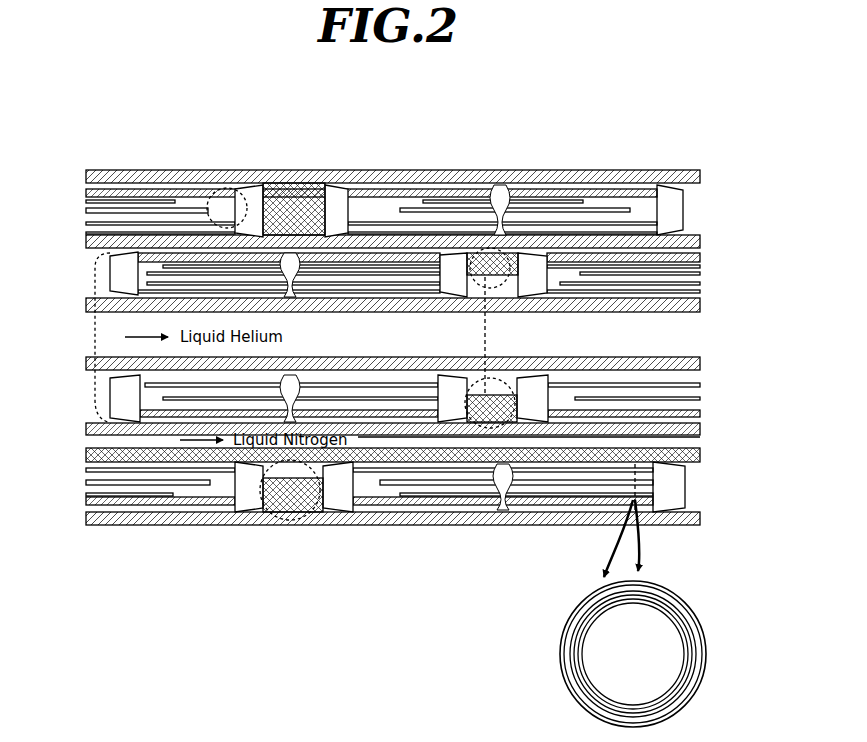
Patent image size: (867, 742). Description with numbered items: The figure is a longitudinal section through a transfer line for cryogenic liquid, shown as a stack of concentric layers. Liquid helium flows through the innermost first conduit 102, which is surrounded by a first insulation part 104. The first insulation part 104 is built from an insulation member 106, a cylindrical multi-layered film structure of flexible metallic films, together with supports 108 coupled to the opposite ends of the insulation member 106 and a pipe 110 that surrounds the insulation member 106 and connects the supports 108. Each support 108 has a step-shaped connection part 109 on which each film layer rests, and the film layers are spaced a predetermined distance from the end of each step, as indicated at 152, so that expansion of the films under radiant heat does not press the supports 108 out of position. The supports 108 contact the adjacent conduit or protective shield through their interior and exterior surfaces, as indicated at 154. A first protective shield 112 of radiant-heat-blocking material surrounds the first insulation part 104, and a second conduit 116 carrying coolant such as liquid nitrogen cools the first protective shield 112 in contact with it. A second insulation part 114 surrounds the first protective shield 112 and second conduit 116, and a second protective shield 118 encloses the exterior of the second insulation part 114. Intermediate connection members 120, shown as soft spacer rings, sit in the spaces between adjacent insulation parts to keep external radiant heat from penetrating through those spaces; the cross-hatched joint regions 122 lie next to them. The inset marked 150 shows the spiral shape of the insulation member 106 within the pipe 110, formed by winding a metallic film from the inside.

The first conduit 102 is at (696, 304).
The first insulation part 104 is at (91, 337).
The insulation member 106 is at (368, 230).
The support 108 is at (445, 268).
The step-shaped connection part 109 is at (162, 256).
The pipe 110 is at (315, 256).
The first protective shield 112 is at (674, 240).
The second insulation part 114 is at (700, 193).
The second conduit 116 is at (702, 455).
The second protective shield 118 is at (523, 172).
The intermediate connection member 120 is at (476, 433).
The solder joint 122 is at (285, 506).
The spiral multi-layered film structure 150 is at (669, 580).
The spacing between film layer and step end 152 is at (577, 508).
The contact of support with adjacent shield or conduit 154 is at (466, 288).